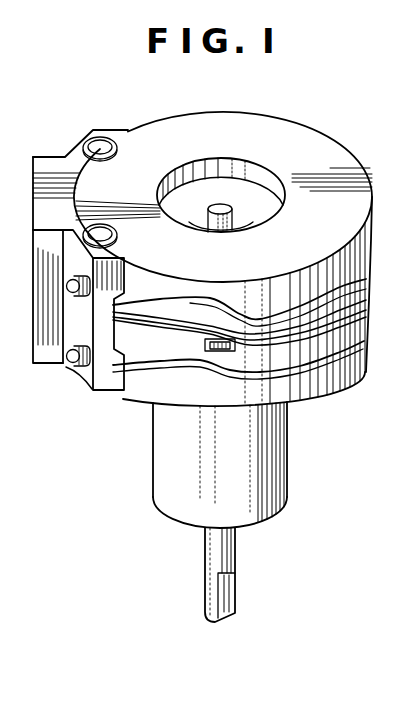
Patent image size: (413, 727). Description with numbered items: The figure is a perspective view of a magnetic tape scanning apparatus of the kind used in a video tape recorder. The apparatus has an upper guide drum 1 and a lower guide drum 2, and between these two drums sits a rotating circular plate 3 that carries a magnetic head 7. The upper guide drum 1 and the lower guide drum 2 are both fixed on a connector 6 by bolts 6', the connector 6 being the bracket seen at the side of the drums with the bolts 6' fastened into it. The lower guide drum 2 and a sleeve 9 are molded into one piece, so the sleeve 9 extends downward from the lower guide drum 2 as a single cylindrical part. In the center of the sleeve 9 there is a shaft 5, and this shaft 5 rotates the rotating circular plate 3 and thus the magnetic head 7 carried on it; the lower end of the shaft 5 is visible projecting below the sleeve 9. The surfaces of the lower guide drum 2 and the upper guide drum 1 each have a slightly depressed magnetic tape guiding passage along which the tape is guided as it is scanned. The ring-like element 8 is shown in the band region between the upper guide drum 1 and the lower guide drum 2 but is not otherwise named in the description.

The upper guide drum 1 is at (345, 141).
The lower guide drum 2 is at (319, 373).
The rotating circular plate 3 is at (362, 297).
The shaft 5 is at (207, 555).
The connector 6 is at (80, 253).
The bolts 6' is at (63, 341).
The magnetic head 7 is at (220, 350).
The wave rings 8 is at (170, 316).
The sleeve 9 is at (165, 432).